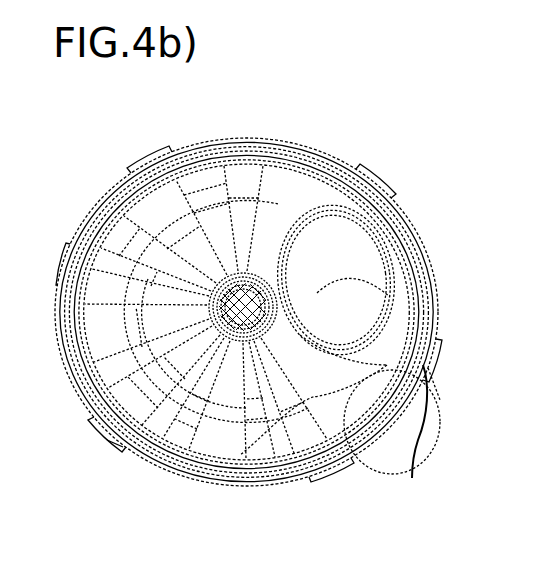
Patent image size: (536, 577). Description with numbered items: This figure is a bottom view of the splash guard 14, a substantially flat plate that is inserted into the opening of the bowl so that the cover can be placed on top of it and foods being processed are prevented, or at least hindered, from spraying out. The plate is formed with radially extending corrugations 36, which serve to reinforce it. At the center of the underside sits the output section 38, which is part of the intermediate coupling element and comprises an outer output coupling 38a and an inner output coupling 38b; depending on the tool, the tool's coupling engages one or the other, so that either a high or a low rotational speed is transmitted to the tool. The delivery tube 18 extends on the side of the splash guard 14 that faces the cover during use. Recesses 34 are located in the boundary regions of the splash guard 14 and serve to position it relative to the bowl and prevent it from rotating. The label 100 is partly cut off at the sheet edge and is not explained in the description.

The splash guard 14 is at (313, 132).
The corrugations 36 is at (213, 180).
The output section 38 is at (248, 300).
The outer output coupling 38a is at (243, 306).
The inner output coupling 38b is at (247, 312).
The delivery tube 18 is at (360, 470).
The recesses 34 is at (392, 444).
The container 100 is at (140, 448).